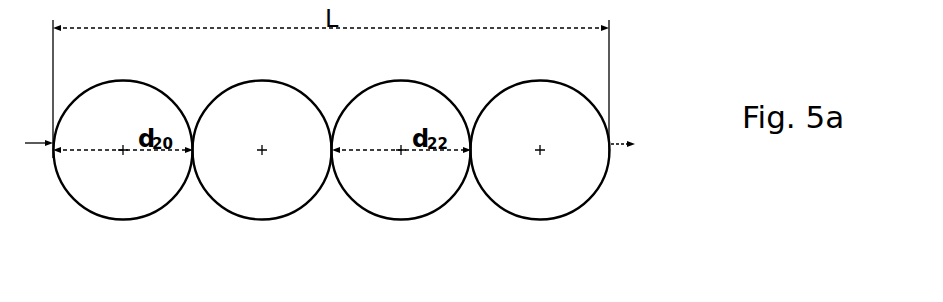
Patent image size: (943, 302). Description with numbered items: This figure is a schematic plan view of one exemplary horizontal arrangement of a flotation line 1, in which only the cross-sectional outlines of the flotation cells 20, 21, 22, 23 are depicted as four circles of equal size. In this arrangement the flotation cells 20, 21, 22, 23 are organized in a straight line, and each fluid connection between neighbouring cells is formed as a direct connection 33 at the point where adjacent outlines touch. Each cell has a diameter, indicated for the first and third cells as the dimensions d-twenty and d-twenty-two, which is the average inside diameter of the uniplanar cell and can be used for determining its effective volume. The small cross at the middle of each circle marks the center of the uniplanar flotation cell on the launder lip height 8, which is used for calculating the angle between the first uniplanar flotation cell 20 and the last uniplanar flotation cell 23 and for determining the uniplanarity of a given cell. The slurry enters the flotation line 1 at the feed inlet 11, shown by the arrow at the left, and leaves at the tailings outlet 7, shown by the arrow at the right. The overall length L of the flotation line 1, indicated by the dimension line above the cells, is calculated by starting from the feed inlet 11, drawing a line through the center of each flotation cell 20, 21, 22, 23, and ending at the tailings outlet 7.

The flotation line 1 is at (538, 246).
The tailings outlet 7 is at (612, 143).
The launder lip height 8 is at (125, 147).
The feed inlet 11 is at (53, 136).
The first uniplanar flotation cell 20 is at (110, 193).
The flotation cell 21 is at (249, 193).
The flotation cell 22 is at (395, 193).
The last uniplanar flotation cell 23 is at (533, 193).
The direct connection 33 is at (193, 156).